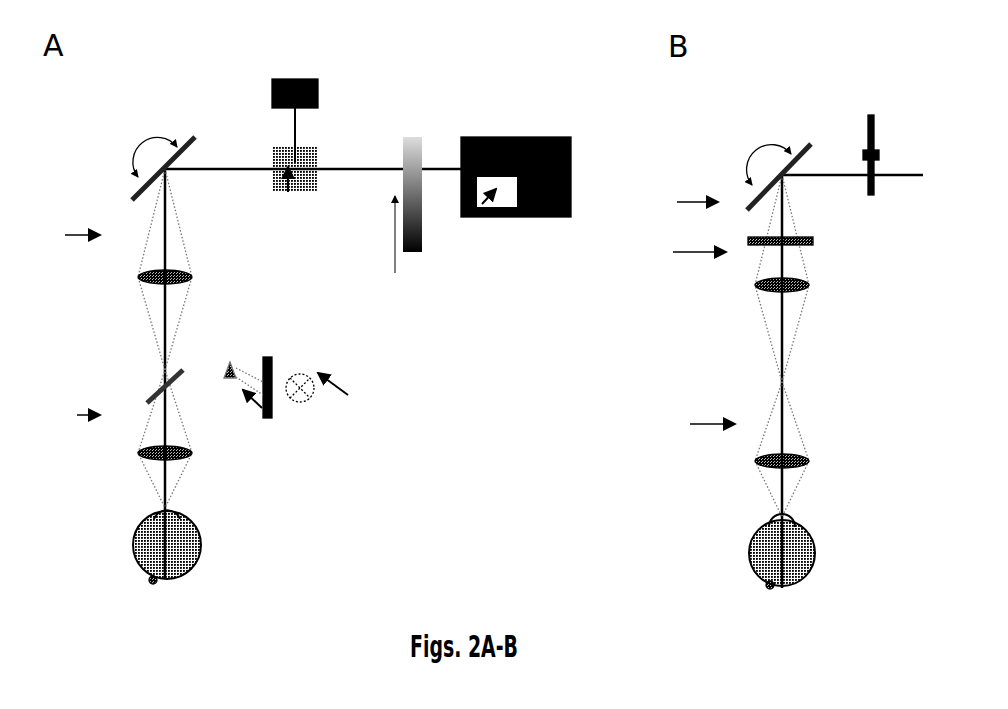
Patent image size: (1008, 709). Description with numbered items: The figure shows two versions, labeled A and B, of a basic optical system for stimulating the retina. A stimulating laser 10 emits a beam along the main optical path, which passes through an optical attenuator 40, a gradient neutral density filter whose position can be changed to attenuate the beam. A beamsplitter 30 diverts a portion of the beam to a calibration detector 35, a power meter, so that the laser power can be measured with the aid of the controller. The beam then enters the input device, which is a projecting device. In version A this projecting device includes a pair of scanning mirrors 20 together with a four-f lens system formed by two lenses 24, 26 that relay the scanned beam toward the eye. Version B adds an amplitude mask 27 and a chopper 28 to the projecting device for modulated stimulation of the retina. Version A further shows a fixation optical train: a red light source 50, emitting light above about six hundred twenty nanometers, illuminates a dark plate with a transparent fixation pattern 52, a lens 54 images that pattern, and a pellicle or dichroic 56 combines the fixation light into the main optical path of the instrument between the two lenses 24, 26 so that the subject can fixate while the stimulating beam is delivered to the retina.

In FIG. 2A, the stimulating laser 10 is at (520, 220).
In FIG. 2A, the scanning mirrors 20 is at (125, 185).
In FIG. 2B, the scanning mirrors 20 is at (735, 188).
In FIG. 2A, the 4-f lens system lens 24 is at (137, 274).
In FIG. 2B, the 4-f lens system lens 24 is at (750, 284).
In FIG. 2A, the 4-f lens system lens 26 is at (137, 452).
In FIG. 2B, the 4-f lens system lens 26 is at (750, 461).
In FIG. 2B, the amplitude mask 27 is at (746, 240).
In FIG. 2B, the chopper 28 is at (877, 125).
In FIG. 2A, the beamsplitter 30 is at (291, 205).
In FIG. 2A, the calibration detector 35 is at (292, 13).
In FIG. 2A, the optical attenuator 40 is at (419, 219).
In FIG. 2A, the red light source 50 is at (318, 405).
In FIG. 2A, the dark plate with transparent fixation pattern 52 is at (295, 288).
In FIG. 2A, the lens 54 is at (237, 418).
In FIG. 2A, the pellicle or dichroic 56 is at (122, 320).